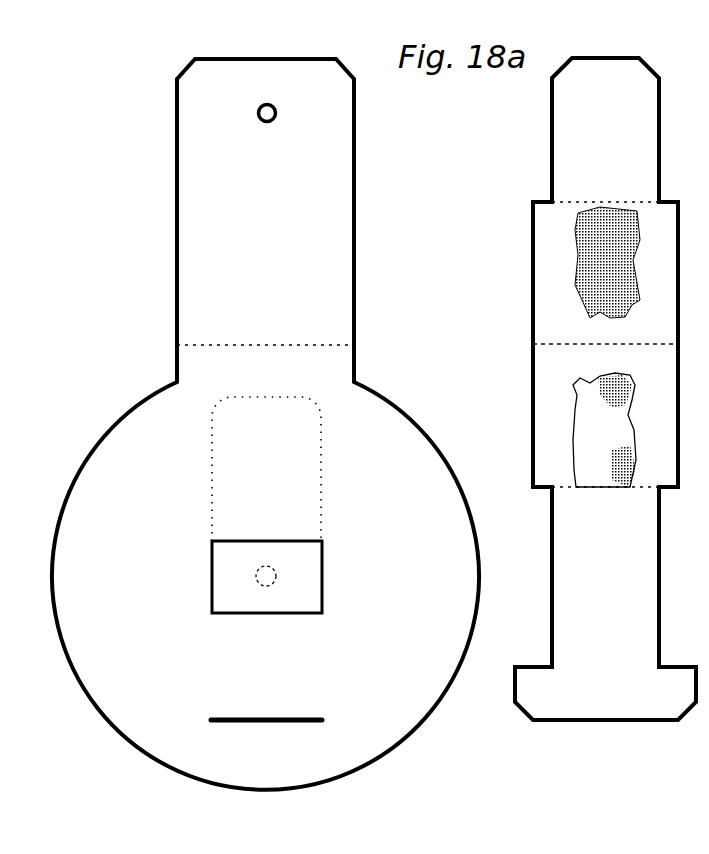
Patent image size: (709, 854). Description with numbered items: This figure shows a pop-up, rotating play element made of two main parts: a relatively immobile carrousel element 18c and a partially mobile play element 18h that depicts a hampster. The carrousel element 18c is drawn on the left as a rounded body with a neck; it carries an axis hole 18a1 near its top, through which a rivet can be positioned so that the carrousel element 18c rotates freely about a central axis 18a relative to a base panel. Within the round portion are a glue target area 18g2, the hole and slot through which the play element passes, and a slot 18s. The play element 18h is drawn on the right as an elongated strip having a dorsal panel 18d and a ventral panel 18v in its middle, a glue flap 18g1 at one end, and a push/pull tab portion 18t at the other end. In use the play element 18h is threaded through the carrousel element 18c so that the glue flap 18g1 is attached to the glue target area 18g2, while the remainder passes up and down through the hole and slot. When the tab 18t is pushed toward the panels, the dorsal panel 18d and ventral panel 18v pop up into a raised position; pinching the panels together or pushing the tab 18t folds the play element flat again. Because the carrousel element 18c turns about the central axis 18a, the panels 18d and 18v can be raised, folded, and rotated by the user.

The carrousel element 18c is at (265, 424).
The axis hole 18a1 is at (263, 123).
The glue target area 18g2 is at (295, 472).
The hampster play element 18h is at (212, 592).
The central axis 18a is at (267, 587).
The slot 18s is at (306, 718).
The push/pull tab portion 18t is at (573, 702).
The glue flap 18g1 is at (572, 148).
The dorsal panel 18d is at (552, 309).
The ventral panel 18v is at (552, 399).